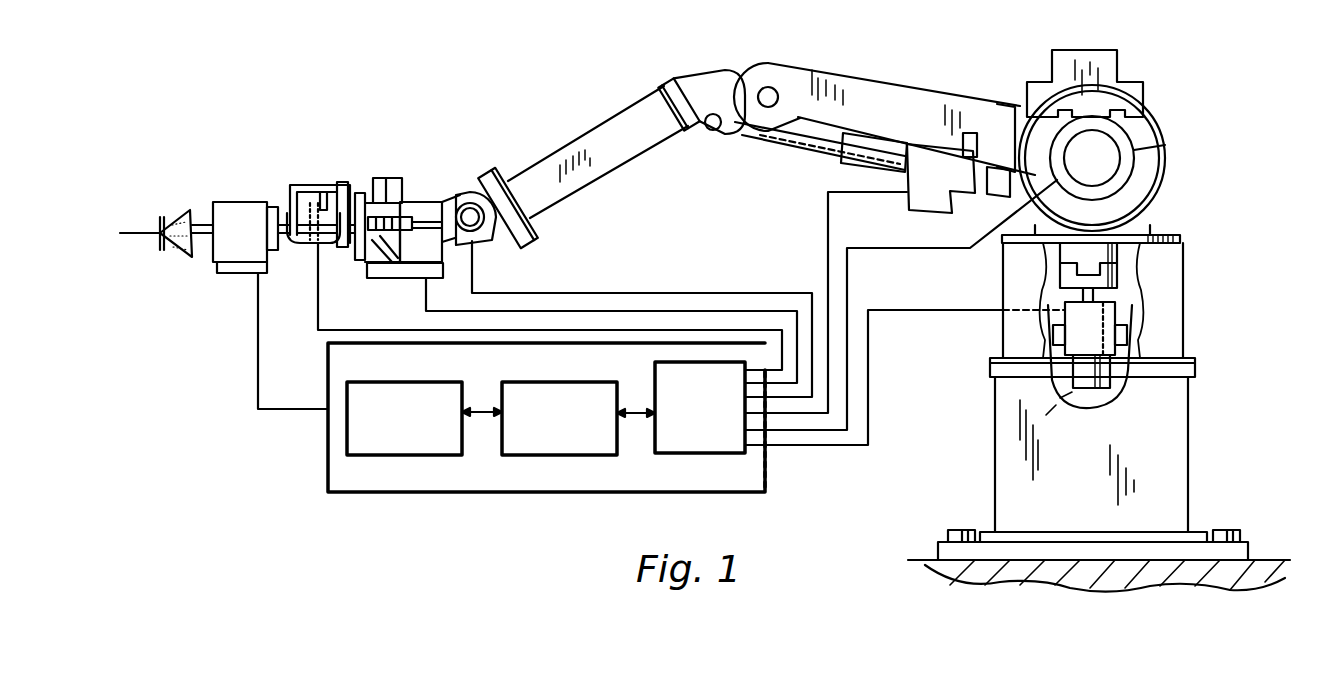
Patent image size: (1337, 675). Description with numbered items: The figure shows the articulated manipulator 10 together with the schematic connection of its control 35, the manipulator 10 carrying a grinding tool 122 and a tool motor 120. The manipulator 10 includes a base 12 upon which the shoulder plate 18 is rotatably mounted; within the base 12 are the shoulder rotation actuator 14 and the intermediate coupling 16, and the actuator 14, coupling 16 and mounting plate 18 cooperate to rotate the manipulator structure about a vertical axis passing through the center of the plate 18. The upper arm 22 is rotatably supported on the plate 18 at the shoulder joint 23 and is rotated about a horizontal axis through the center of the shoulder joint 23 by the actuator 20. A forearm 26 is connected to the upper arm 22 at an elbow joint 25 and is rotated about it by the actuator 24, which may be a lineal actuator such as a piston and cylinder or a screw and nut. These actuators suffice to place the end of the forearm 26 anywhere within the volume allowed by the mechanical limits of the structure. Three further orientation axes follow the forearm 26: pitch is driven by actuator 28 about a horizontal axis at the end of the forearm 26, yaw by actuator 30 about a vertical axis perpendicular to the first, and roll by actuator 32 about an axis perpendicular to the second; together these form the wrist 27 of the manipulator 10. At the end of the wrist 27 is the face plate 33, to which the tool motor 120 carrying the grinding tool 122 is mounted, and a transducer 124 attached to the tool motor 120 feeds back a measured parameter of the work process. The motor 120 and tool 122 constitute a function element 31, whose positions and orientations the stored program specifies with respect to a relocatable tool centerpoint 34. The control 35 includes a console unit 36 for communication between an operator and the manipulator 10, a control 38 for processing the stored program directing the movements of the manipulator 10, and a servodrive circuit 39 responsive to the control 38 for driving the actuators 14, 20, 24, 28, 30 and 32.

The articulated manipulator 10 is at (852, 52).
The base 12 is at (1190, 425).
The shoulder rotation actuator 14 is at (1118, 312).
The intermediate coupling 16 is at (1117, 273).
The shoulder plate 18 is at (1160, 238).
The actuator 20 is at (1166, 145).
The upper arm 22 is at (882, 80).
The shoulder joint 23 is at (1135, 78).
The actuator 24 is at (935, 212).
The elbow joint 25 is at (757, 61).
The forearm 26 is at (617, 167).
The wrist 27 is at (312, 170).
The actuator 28 is at (487, 241).
The actuator 30 is at (388, 188).
The function element 31 is at (193, 273).
The actuator 32 is at (300, 250).
The face plate 33 is at (269, 207).
The tool centerpoint 34 is at (158, 240).
The control 35 is at (596, 373).
The console unit 36 is at (438, 456).
The control 38 is at (588, 455).
The servodrive circuit 39 is at (690, 457).
The tool motor 120 is at (233, 202).
The grinding tool 122 is at (178, 212).
The transducer 124 is at (254, 275).